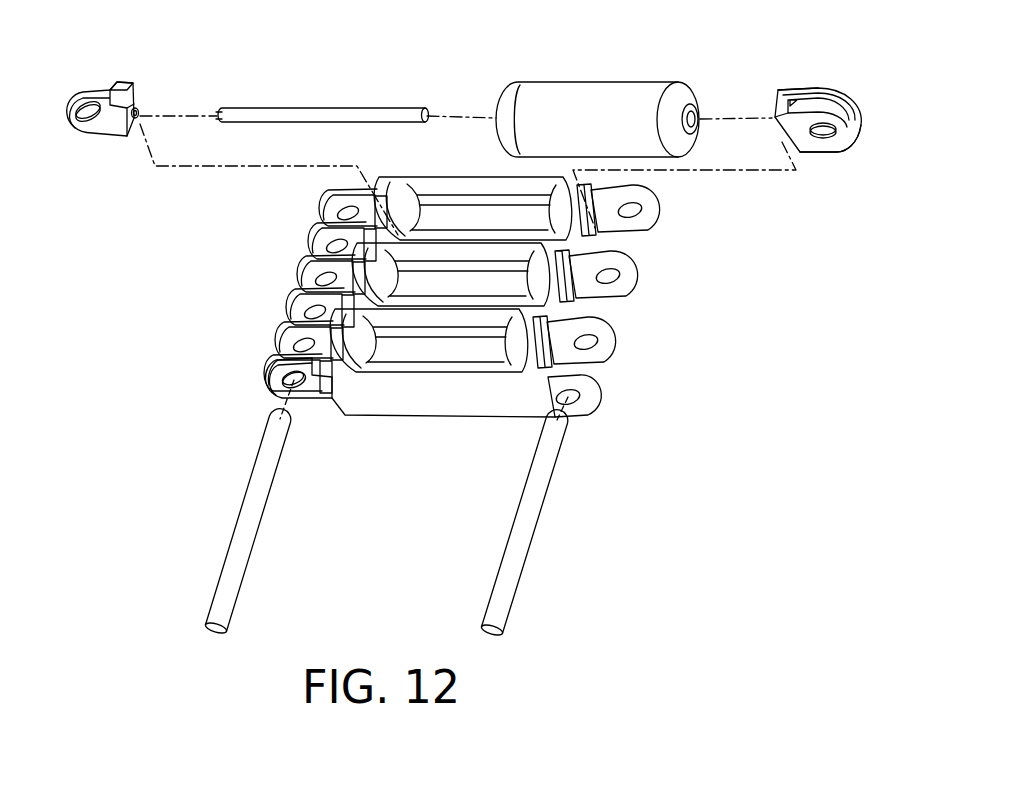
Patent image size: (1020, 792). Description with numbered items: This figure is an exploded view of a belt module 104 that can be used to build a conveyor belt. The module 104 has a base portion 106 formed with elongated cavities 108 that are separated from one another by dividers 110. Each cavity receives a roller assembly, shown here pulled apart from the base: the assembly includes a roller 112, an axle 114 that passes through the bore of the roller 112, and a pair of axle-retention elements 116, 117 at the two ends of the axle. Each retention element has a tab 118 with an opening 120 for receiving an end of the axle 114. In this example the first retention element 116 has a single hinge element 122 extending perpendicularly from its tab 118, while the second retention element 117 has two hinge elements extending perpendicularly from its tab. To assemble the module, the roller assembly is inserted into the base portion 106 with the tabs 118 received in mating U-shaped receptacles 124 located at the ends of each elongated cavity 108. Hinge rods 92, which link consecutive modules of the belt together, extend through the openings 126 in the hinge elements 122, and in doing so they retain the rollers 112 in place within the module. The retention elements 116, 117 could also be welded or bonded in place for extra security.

The hinge rods 92 is at (528, 537).
The belt module 104 is at (553, 391).
The base portion 106 is at (427, 404).
The cavities 108 is at (461, 214).
The dividers 110 is at (461, 384).
The roller 112 is at (577, 92).
The axle 114 is at (345, 112).
The first retention element 116 is at (129, 138).
The second retention element 117 is at (807, 143).
The tab 118 is at (128, 100).
The opening 120 is at (141, 117).
The hinge element 122 is at (85, 133).
The U-shaped receptacles 124 is at (543, 357).
The openings 126 is at (822, 138).